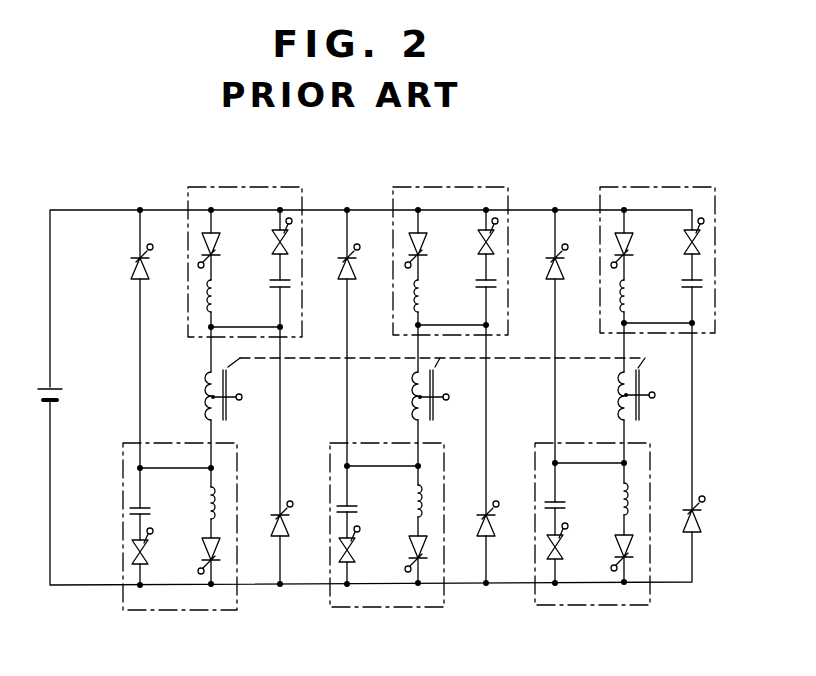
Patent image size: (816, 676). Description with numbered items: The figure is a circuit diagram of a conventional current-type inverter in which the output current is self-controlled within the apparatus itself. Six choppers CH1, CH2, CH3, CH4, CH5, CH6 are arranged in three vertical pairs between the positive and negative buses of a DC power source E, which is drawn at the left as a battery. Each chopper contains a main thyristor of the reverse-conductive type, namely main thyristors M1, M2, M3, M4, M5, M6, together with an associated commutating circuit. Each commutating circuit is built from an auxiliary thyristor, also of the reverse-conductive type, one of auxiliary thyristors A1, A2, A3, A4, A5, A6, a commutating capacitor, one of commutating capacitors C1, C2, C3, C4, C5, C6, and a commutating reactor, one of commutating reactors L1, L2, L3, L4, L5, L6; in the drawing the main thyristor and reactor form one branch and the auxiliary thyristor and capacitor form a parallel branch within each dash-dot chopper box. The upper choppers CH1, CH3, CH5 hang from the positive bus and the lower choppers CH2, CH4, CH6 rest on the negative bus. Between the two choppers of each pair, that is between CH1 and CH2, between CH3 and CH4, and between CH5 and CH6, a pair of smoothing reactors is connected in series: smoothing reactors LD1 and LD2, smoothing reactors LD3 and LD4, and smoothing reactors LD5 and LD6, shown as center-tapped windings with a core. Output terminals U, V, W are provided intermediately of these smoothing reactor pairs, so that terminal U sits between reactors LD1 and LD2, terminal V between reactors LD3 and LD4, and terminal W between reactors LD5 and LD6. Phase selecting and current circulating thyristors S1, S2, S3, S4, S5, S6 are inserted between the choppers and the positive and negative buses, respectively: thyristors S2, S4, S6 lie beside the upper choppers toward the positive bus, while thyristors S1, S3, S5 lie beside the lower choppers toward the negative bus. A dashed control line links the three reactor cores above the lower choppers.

The chopper CH1 is at (245, 185).
The chopper CH2 is at (212, 610).
The chopper CH3 is at (453, 185).
The chopper CH4 is at (400, 607).
The chopper CH5 is at (653, 185).
The chopper CH6 is at (605, 605).
The DC power source E is at (66, 394).
The phase selecting and current circulating thyristor S1 is at (273, 524).
The phase selecting and current circulating thyristor S2 is at (134, 268).
The phase selecting and current circulating thyristor S3 is at (479, 524).
The phase selecting and current circulating thyristor S4 is at (339, 267).
The phase selecting and current circulating thyristor S5 is at (685, 519).
The phase selecting and current circulating thyristor S6 is at (547, 267).
The main thyristor M1 is at (216, 244).
The main thyristor M2 is at (210, 546).
The main thyristor M3 is at (423, 244).
The main thyristor M4 is at (417, 544).
The main thyristor M5 is at (629, 244).
The main thyristor M6 is at (623, 543).
The auxiliary thyristor A1 is at (272, 245).
The auxiliary thyristor A2 is at (150, 545).
The auxiliary thyristor A3 is at (478, 245).
The auxiliary thyristor A4 is at (357, 543).
The auxiliary thyristor A5 is at (684, 245).
The auxiliary thyristor A6 is at (565, 540).
The commutating capacitor C1 is at (271, 283).
The commutating capacitor C2 is at (152, 511).
The commutating capacitor C3 is at (477, 283).
The commutating capacitor C4 is at (359, 509).
The commutating capacitor C5 is at (683, 283).
The commutating capacitor C6 is at (567, 505).
The commutating reactor L1 is at (214, 298).
The commutating reactor L2 is at (209, 499).
The commutating reactor L3 is at (421, 298).
The commutating reactor L4 is at (419, 497).
The commutating reactor L5 is at (627, 298).
The commutating reactor L6 is at (623, 495).
The smoothing reactor LD1 is at (206, 384).
The smoothing reactor LD2 is at (208, 409).
The smoothing reactor LD3 is at (413, 384).
The smoothing reactor LD4 is at (415, 409).
The smoothing reactor LD5 is at (619, 384).
The smoothing reactor LD6 is at (621, 409).
The output terminal U is at (235, 395).
The output terminal V is at (441, 395).
The output terminal W is at (649, 395).